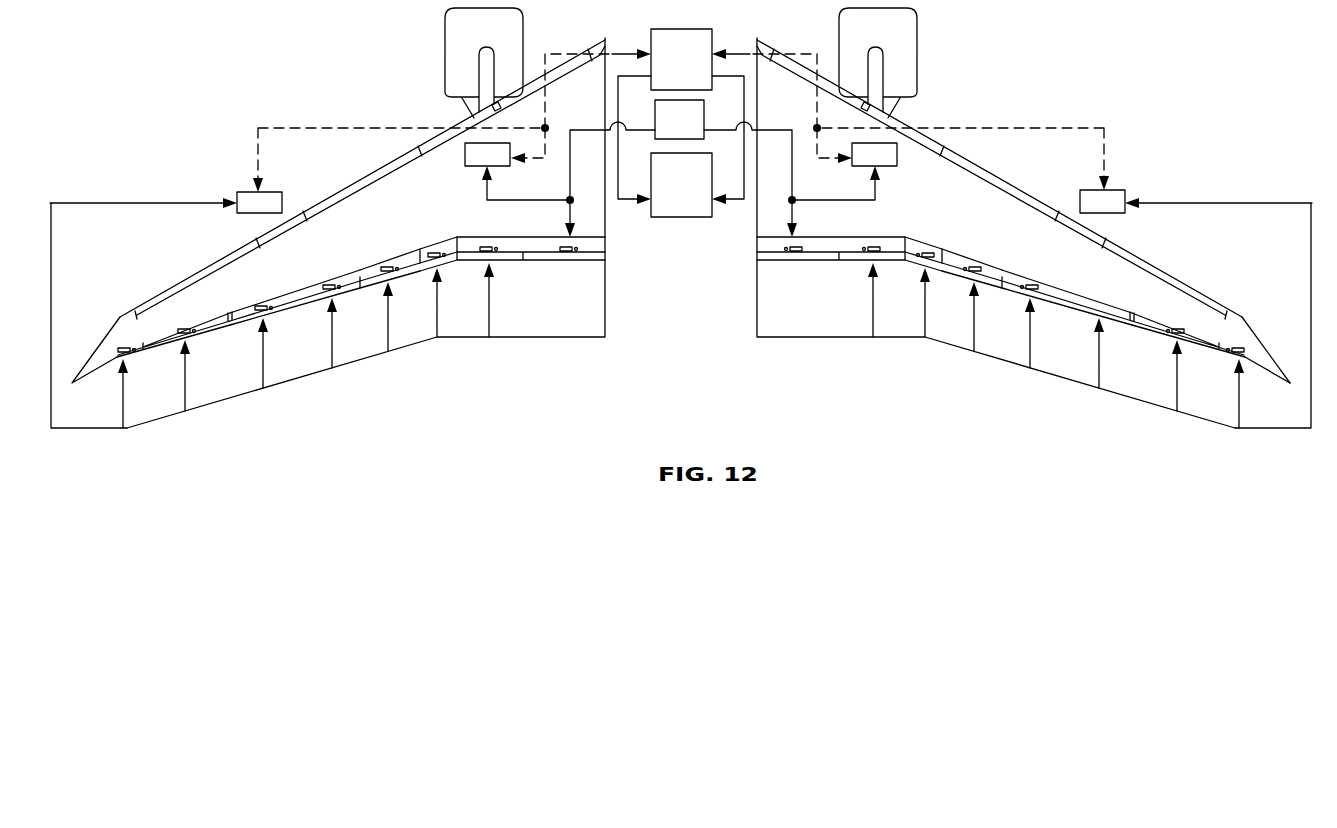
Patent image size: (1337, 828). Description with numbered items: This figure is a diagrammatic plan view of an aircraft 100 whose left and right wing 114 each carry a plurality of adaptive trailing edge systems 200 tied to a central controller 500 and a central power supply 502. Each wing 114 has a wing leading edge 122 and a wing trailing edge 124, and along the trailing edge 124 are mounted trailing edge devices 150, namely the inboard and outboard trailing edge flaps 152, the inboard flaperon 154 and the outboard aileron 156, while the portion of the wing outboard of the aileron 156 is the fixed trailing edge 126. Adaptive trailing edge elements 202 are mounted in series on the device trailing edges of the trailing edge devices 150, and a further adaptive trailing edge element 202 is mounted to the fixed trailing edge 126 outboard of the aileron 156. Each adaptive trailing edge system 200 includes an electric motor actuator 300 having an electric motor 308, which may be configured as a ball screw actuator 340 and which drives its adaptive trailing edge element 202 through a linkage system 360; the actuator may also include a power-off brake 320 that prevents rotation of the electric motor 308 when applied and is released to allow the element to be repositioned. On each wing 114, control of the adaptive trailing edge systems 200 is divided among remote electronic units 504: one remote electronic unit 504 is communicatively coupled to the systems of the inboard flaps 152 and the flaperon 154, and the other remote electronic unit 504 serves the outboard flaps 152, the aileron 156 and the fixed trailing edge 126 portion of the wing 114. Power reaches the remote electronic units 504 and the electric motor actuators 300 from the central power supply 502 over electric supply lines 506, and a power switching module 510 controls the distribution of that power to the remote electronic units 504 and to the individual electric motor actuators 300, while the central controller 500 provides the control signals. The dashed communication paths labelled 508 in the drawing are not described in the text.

The aircraft 100 is at (1238, 319).
The wing 114 is at (1187, 289).
The wing leading edge 122 is at (1277, 358).
The wing trailing edge 124 is at (1265, 373).
The fixed trailing edge 126 is at (94, 372).
The trailing edge device 150 is at (366, 264).
The trailing edge flap 152 is at (402, 245).
The flaperon 154 is at (449, 249).
The aileron 156 is at (212, 325).
The adaptive trailing edge system 200 is at (261, 306).
The adaptive trailing edge element 202 is at (213, 328).
The electric motor actuator 300 is at (123, 346).
The electric motor 308 is at (334, 282).
The power-off brake 320 is at (1177, 329).
The ball screw actuator 340 is at (928, 254).
The linkage system 360 is at (444, 250).
The central controller 500 is at (663, 72).
The central power supply 502 is at (662, 132).
The remote electronic unit 504 is at (243, 193).
The electric supply line 506 is at (574, 281).
The communication link 508 is at (289, 127).
The power switching module 510 is at (663, 197).